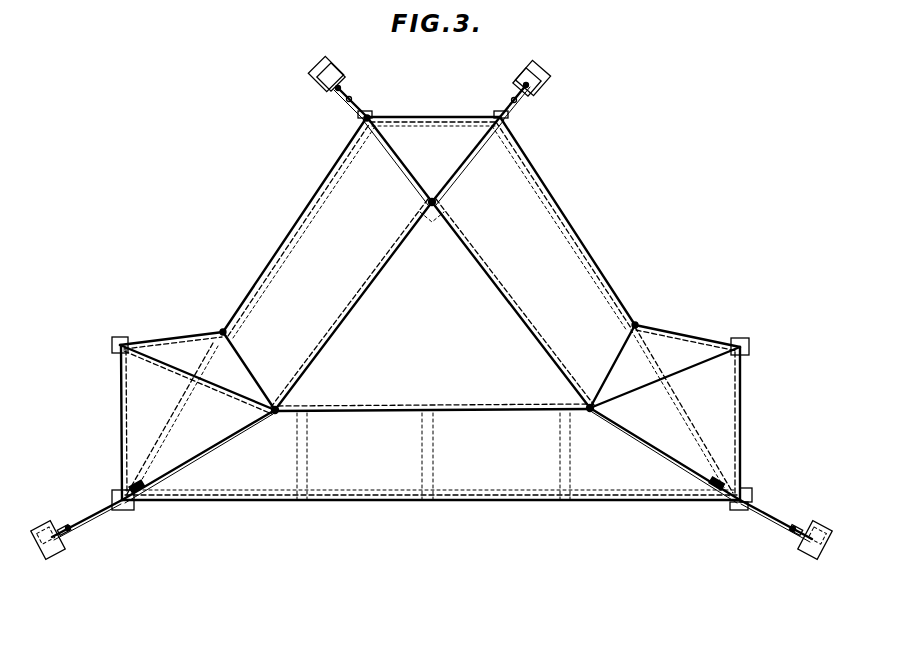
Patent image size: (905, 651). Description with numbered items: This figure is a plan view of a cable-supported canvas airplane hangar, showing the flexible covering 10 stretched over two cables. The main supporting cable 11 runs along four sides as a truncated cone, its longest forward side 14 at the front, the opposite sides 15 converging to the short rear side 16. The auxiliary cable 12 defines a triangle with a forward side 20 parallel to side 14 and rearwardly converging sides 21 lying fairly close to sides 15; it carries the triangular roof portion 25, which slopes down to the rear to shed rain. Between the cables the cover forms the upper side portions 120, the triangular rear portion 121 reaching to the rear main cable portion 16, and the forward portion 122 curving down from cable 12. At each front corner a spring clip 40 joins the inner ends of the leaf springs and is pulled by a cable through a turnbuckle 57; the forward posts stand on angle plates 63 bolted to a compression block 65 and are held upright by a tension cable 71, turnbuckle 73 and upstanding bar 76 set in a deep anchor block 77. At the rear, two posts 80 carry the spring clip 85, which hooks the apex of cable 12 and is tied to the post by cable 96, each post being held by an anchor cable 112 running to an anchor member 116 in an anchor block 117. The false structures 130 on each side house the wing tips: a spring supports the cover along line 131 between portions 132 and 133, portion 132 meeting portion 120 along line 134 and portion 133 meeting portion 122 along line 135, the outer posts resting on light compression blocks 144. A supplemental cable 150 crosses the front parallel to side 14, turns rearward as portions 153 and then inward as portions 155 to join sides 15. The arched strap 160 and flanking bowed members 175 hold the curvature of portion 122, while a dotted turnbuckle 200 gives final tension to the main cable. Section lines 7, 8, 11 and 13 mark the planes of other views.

The section line 7- 7 is at (634, 250).
The section line 8- 8 is at (645, 403).
The flexible covering 10 is at (524, 193).
The main supporting cable 11 is at (533, 491).
The auxiliary cable 12 is at (515, 309).
The section line 13- 13 is at (300, 398).
The forward side 14 is at (386, 491).
The opposite sides 15 is at (305, 225).
The rear side 16 is at (461, 112).
The forward side 20 is at (365, 402).
The rearwardly converging sides 21 is at (372, 303).
The cover portion 25 is at (353, 306).
The spring clip 40 is at (266, 412).
The turnbuckle 57 is at (140, 485).
The angle plates 63 is at (752, 493).
The compression block 65 is at (114, 492).
The tension cable 71 is at (82, 523).
The turnbuckle 73 is at (68, 535).
The upstanding bar 76 is at (823, 548).
The anchor block 77 is at (45, 525).
The post 80 is at (372, 120).
The spring clip 85 is at (426, 206).
The cable 96 is at (396, 155).
The anchor cable 112 is at (355, 105).
The anchor member 116 is at (324, 60).
The anchor block 117 is at (315, 85).
The upper side portions 120 is at (269, 264).
The cover portion 121 is at (416, 113).
The forward portion 122 is at (540, 399).
The false structures 130 is at (181, 335).
The line 131 is at (700, 361).
The cover portion 132 is at (160, 344).
The cover portion 133 is at (122, 392).
The line 134 is at (617, 352).
The line 135 is at (650, 445).
The compression block 144 is at (114, 341).
The supplemental cable 150 is at (745, 440).
The cable portion 153 is at (162, 400).
The cable portion 155 is at (207, 341).
The arched metallic strap 160 is at (440, 455).
The bowed members 175 is at (310, 463).
The turnbuckle 200 is at (703, 425).